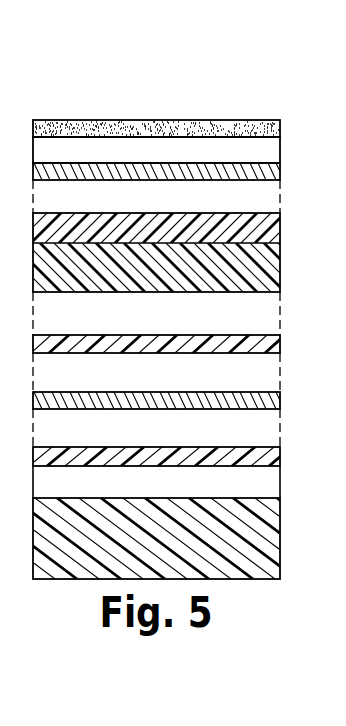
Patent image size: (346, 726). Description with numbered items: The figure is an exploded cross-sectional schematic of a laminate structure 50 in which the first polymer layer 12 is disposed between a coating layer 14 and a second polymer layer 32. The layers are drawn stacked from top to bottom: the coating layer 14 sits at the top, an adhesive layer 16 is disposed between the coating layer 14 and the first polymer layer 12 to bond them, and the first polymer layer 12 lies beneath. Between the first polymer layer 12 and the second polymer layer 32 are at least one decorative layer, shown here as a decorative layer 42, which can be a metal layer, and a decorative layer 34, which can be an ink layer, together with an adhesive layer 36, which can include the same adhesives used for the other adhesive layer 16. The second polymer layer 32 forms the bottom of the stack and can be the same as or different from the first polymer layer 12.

The laminate structure 50 is at (194, 80).
The coating layer 14 is at (281, 130).
The adhesive layer 16 is at (278, 171).
The first polymer layer 12 is at (296, 240).
The decorative layer 42 is at (270, 346).
The adhesive layer 36 is at (273, 402).
The decorative layer 34 is at (274, 458).
The second polymer layer 32 is at (264, 546).